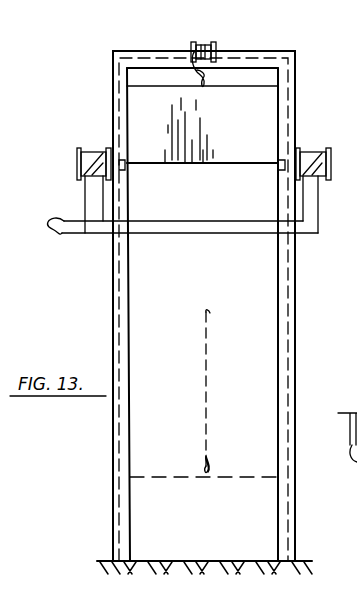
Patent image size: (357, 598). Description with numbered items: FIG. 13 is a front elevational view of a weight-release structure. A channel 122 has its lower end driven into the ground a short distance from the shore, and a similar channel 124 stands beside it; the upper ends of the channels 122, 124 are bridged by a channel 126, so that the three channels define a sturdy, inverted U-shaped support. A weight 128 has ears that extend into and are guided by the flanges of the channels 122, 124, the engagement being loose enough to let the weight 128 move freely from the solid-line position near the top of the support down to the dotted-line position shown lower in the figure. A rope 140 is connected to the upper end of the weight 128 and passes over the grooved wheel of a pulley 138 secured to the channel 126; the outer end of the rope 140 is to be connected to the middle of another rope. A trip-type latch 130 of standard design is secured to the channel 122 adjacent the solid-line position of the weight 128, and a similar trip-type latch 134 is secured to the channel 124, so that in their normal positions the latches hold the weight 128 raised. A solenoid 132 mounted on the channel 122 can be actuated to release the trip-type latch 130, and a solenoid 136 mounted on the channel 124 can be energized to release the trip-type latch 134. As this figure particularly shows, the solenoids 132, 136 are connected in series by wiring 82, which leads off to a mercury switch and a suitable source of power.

The rails 82 is at (56, 238).
The channel 122 is at (117, 328).
The channel 124 is at (289, 322).
The channel 126 is at (140, 51).
The weight 128 is at (267, 108).
The trip-type latch 130 is at (128, 168).
The solenoid 132 is at (100, 150).
The trip-type latch 134 is at (270, 169).
The solenoid 136 is at (312, 150).
The pulley 138 is at (215, 46).
The rope 140 is at (190, 46).